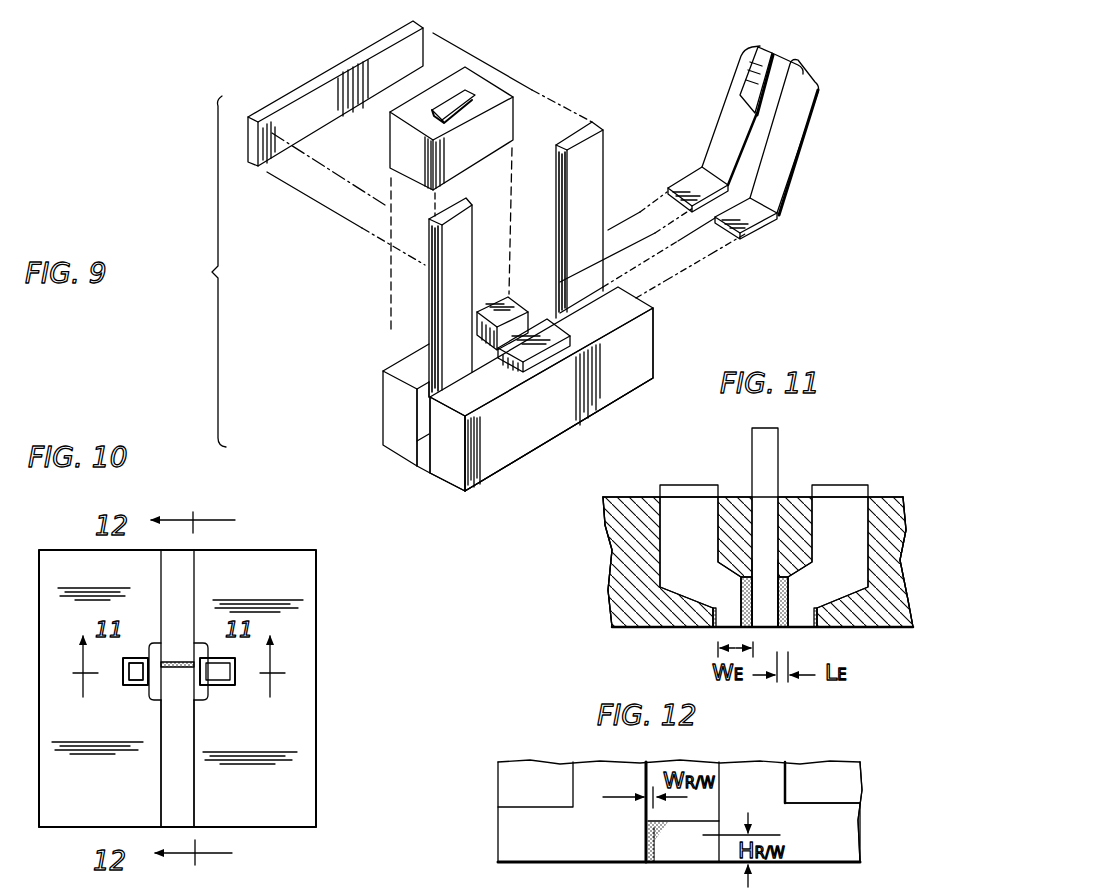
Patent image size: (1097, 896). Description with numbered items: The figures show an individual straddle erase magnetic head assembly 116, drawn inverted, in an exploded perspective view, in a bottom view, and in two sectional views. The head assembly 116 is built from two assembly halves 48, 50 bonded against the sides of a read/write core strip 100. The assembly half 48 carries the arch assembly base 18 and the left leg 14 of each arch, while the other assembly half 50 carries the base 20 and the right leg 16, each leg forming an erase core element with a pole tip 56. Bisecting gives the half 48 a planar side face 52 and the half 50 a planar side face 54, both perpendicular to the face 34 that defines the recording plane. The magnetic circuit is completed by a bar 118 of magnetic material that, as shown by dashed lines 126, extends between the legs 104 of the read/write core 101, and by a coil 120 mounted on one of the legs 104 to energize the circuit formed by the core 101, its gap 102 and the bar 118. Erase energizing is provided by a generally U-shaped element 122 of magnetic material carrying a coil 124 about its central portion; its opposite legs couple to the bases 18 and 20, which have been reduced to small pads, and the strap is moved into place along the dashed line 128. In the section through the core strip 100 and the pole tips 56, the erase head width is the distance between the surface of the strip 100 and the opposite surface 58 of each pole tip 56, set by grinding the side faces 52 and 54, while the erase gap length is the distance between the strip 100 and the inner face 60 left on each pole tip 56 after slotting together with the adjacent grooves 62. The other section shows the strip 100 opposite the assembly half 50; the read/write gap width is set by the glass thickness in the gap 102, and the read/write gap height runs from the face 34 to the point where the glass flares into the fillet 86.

In FIG. 10, the left leg 14 is at (130, 673).
In FIG. 11, the left leg 14 is at (675, 530).
In FIG. 10, the right leg 16 is at (235, 672).
In FIG. 11, the right leg 16 is at (838, 501).
In FIG. 9, the arch assembly base 18 is at (540, 363).
In FIG. 11, the arch assembly base 18 is at (853, 485).
In FIG. 9, the base 20 is at (497, 307).
In FIG. 11, the base 20 is at (672, 490).
In FIG. 9, the face 34 is at (392, 453).
In FIG. 10, the face 34 is at (307, 767).
In FIG. 11, the face 34 is at (628, 632).
In FIG. 12, the face 34 is at (820, 865).
In FIG. 9, the assembly half 48 is at (453, 471).
In FIG. 10, the assembly half 48 is at (60, 560).
In FIG. 11, the assembly half 48 is at (888, 505).
In FIG. 9, the assembly half 50 is at (391, 424).
In FIG. 10, the assembly half 50 is at (310, 575).
In FIG. 11, the assembly half 50 is at (617, 577).
In FIG. 12, the assembly half 50 is at (853, 760).
In FIG. 10, the side face 52 is at (160, 798).
In FIG. 11, the side face 52 is at (773, 498).
In FIG. 12, the side face 52 is at (847, 782).
In FIG. 10, the side face 54 is at (196, 812).
In FIG. 11, the side face 54 is at (751, 505).
In FIG. 10, the pole tip 56 is at (138, 662).
In FIG. 11, the pole tip 56 is at (710, 618).
In FIG. 11, the opposite surface 58 is at (712, 612).
In FIG. 11, the inner face 60 is at (782, 627).
In FIG. 10, the groove 62 is at (155, 700).
In FIG. 12, the fillet 86 is at (665, 826).
In FIG. 11, the read/write core strip 100 is at (755, 443).
In FIG. 12, the read/write core strip 100 is at (843, 832).
In FIG. 9, the read/write core 101 is at (420, 462).
In FIG. 10, the read/write core 101 is at (183, 570).
In FIG. 10, the gap 102 is at (175, 660).
In FIG. 12, the gap 102 is at (646, 862).
In FIG. 9, the legs 104 is at (604, 129).
In FIG. 12, the legs 104 is at (590, 768).
In FIG. 9, the individual head assembly 116 is at (360, 397).
In FIG. 10, the individual head assembly 116 is at (327, 637).
In FIG. 11, the individual head assembly 116 is at (604, 607).
In FIG. 12, the individual head assembly 116 is at (494, 827).
In FIG. 9, the bar 118 is at (349, 60).
In FIG. 9, the coil 120 is at (467, 72).
In FIG. 9, the U-shaped element 122 is at (731, 91).
In FIG. 9, the coil 124 is at (783, 58).
In FIG. 9, the dashed lines 126 is at (332, 213).
In FIG. 9, the dashed line 128 is at (670, 280).